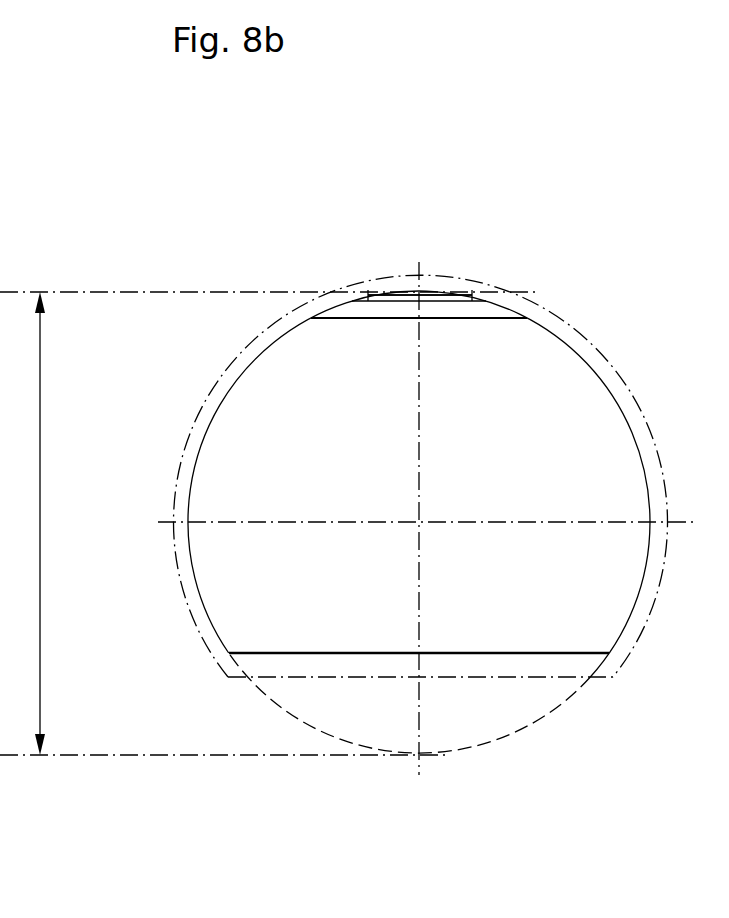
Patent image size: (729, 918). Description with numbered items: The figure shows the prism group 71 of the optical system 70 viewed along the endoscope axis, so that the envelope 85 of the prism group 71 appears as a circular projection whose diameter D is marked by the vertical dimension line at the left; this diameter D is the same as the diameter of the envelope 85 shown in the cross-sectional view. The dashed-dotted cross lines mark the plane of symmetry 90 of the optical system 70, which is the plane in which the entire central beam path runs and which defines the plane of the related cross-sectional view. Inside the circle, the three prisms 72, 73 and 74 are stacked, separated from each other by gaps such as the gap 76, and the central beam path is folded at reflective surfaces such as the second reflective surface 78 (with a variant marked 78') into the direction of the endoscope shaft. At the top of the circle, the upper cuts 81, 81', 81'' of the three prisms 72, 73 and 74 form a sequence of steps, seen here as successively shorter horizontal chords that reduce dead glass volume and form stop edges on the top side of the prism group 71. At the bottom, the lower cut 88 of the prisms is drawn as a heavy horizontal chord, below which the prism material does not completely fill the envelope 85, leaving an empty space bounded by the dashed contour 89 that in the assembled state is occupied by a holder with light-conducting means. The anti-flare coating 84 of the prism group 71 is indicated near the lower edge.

The optical system 70 is at (603, 198).
The prism group 71 is at (590, 299).
The first prism 72 is at (613, 617).
The second prism 73 is at (505, 314).
The third prism 74 is at (470, 292).
The gap 76 is at (9, 539).
The second reflective surface 78 is at (9, 583).
The second reference element variant 78' is at (7, 719).
The top cut 81 is at (378, 267).
The upper cut 81' is at (375, 256).
The upper cut 81'' is at (426, 249).
The anti-flare coating 84 is at (362, 677).
The envelope 85 is at (615, 395).
The lower cut 88 is at (571, 655).
The lower dashed contour 89 is at (313, 706).
The plane of symmetry 90 is at (428, 468).
The diameter of the envelope D is at (45, 528).